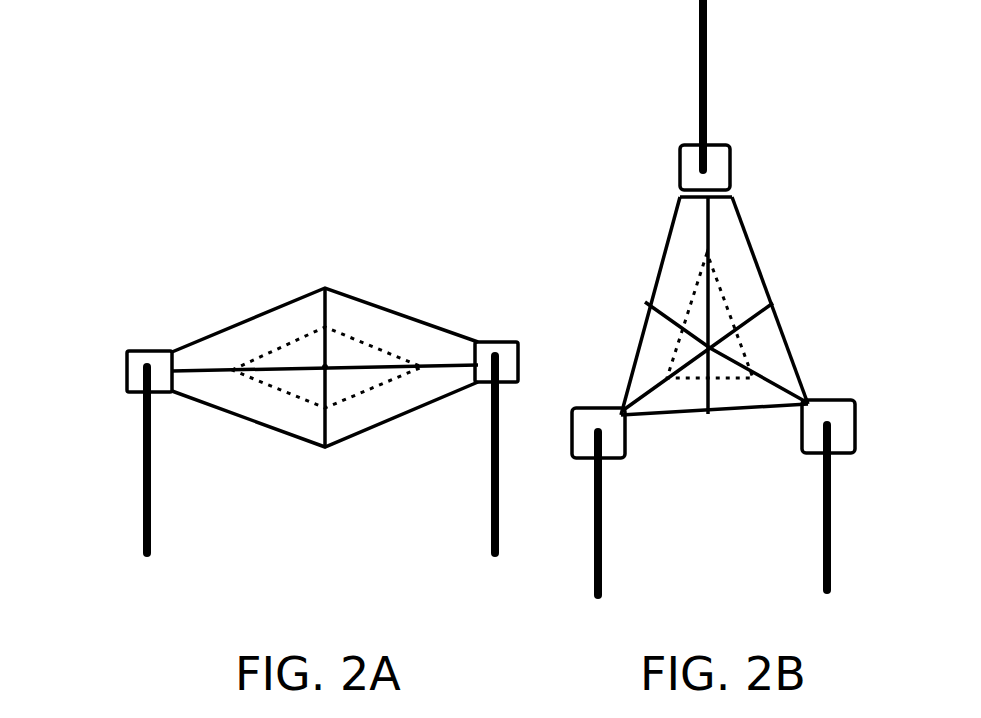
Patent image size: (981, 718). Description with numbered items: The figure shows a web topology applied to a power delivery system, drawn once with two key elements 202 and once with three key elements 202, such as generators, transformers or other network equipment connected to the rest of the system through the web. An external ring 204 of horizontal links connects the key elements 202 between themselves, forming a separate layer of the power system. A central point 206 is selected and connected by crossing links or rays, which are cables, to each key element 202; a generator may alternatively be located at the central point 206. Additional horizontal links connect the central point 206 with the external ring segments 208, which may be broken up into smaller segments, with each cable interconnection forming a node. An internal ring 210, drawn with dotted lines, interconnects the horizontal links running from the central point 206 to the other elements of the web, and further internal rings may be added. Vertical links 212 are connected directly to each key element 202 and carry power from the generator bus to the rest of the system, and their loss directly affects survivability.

In FIG. 2A, the key elements 202 is at (130, 348).
In FIG. 2A, the external ring 204 is at (318, 288).
In FIG. 2A, the central point 206 is at (323, 370).
In FIG. 2A, the external ring segments 208 is at (233, 418).
In FIG. 2A, the internal ring 210 is at (382, 340).
In FIG. 2A, the vertical links 212 is at (143, 510).
In FIG. 2B, the vertical links 212 is at (697, 33).